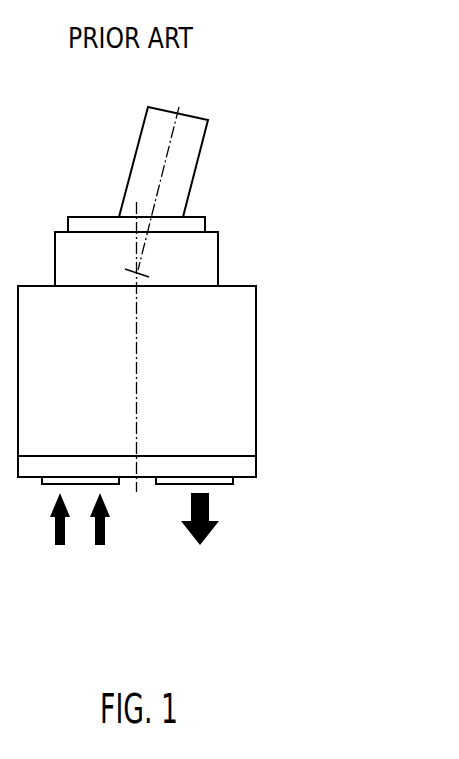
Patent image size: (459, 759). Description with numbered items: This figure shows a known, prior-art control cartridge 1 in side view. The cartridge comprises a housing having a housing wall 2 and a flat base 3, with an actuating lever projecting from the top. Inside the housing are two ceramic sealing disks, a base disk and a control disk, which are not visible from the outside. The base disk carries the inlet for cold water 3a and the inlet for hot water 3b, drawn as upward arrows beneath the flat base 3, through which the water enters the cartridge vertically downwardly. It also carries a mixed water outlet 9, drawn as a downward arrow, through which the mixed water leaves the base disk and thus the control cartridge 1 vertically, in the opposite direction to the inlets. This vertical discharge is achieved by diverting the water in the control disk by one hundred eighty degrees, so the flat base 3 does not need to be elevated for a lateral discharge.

The control cartridge 1 is at (324, 264).
The housing wall 2 is at (256, 413).
The flat base 3 is at (256, 467).
The inlet for cold water 3a is at (55, 536).
The inlet for hot water 3b is at (109, 536).
The mixed water outlet 9 is at (210, 510).